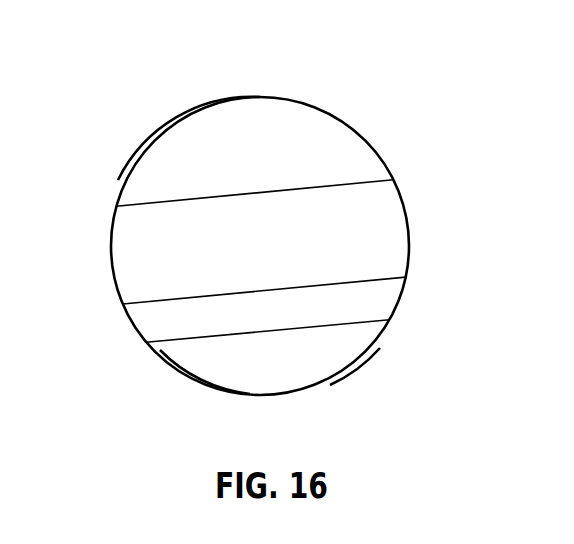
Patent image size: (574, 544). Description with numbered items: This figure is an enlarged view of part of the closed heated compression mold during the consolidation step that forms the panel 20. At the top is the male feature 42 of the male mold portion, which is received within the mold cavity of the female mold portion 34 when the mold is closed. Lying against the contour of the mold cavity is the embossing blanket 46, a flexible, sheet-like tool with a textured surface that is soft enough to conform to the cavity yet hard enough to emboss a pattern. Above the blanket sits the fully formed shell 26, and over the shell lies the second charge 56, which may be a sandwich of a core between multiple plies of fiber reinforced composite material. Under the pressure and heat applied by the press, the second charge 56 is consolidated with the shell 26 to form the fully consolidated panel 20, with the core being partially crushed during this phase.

The panel 20 is at (181, 232).
The shell 26 is at (158, 325).
The female mold portion 34 is at (230, 365).
The male feature 42 is at (259, 152).
The embossing blanket 46 is at (352, 322).
The second charge 56 is at (358, 233).